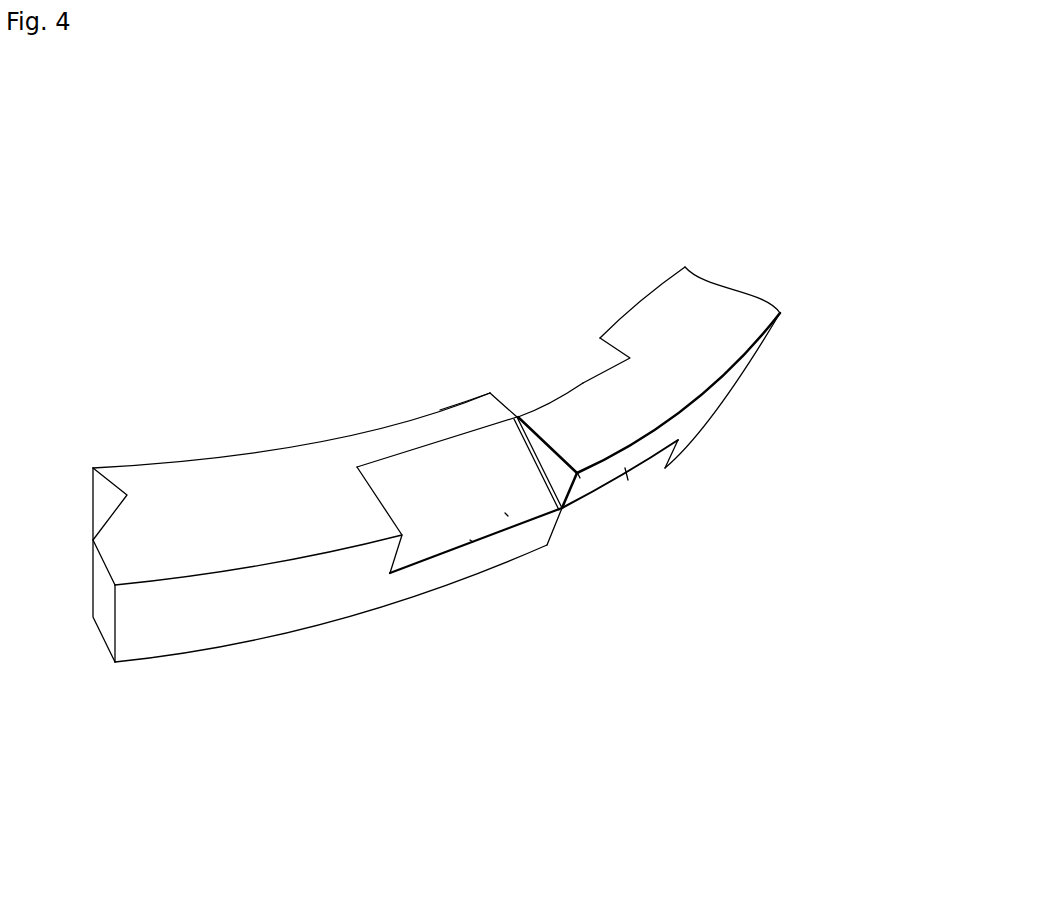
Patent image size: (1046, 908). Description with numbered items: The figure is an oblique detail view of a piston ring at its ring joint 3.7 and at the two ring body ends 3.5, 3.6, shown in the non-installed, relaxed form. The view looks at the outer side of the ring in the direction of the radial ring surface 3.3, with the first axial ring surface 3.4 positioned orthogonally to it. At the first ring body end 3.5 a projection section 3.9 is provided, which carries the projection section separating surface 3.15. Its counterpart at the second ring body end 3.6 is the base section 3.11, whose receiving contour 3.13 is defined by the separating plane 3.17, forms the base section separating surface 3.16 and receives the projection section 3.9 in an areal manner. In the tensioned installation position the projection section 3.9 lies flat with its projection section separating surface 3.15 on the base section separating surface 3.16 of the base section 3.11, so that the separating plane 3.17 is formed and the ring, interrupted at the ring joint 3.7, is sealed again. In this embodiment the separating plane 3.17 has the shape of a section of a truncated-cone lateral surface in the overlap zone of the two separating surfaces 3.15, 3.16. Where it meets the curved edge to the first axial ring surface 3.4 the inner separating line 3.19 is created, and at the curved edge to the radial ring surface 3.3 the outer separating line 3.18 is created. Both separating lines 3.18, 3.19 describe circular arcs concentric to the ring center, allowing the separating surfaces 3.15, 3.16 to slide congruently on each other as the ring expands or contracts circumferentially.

The radial ring surface 3.3 is at (257, 628).
The first axial ring surface 3.4 is at (222, 537).
The first ring body end 3.5 is at (620, 290).
The second ring body end 3.6 is at (433, 640).
The ring joint 3.7 is at (463, 373).
The projection section 3.9 is at (632, 448).
The base section 3.11 is at (468, 580).
The receiving contour 3.13 is at (470, 540).
The projection section separating surface 3.15 is at (625, 468).
The base section separating surface 3.16 is at (505, 513).
The separating plane 3.17 is at (463, 467).
The outer separating line 3.18 is at (537, 519).
The inner separating line 3.19 is at (493, 427).